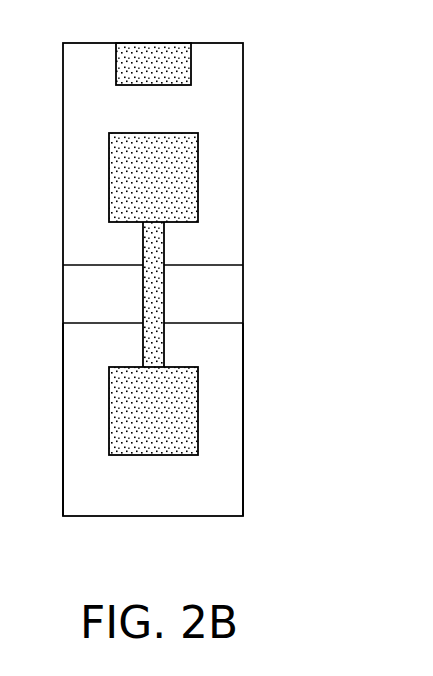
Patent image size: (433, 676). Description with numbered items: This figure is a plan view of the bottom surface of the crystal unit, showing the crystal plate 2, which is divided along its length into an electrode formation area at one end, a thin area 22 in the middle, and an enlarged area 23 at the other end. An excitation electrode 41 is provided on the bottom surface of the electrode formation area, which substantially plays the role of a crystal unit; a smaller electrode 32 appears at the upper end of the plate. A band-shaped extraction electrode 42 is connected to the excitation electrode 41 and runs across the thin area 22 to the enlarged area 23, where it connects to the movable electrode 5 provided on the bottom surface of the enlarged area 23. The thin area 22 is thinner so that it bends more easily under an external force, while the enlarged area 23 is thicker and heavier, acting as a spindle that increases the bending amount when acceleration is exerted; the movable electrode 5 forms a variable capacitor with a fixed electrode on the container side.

The crystal plate 2 is at (193, 530).
The movable electrode 5 is at (198, 401).
The thin area 22 is at (243, 293).
The enlarged area 23 is at (243, 428).
The conductive pad 32 is at (191, 63).
The excitation electrode 41 is at (198, 176).
The extraction electrode 42 is at (164, 247).